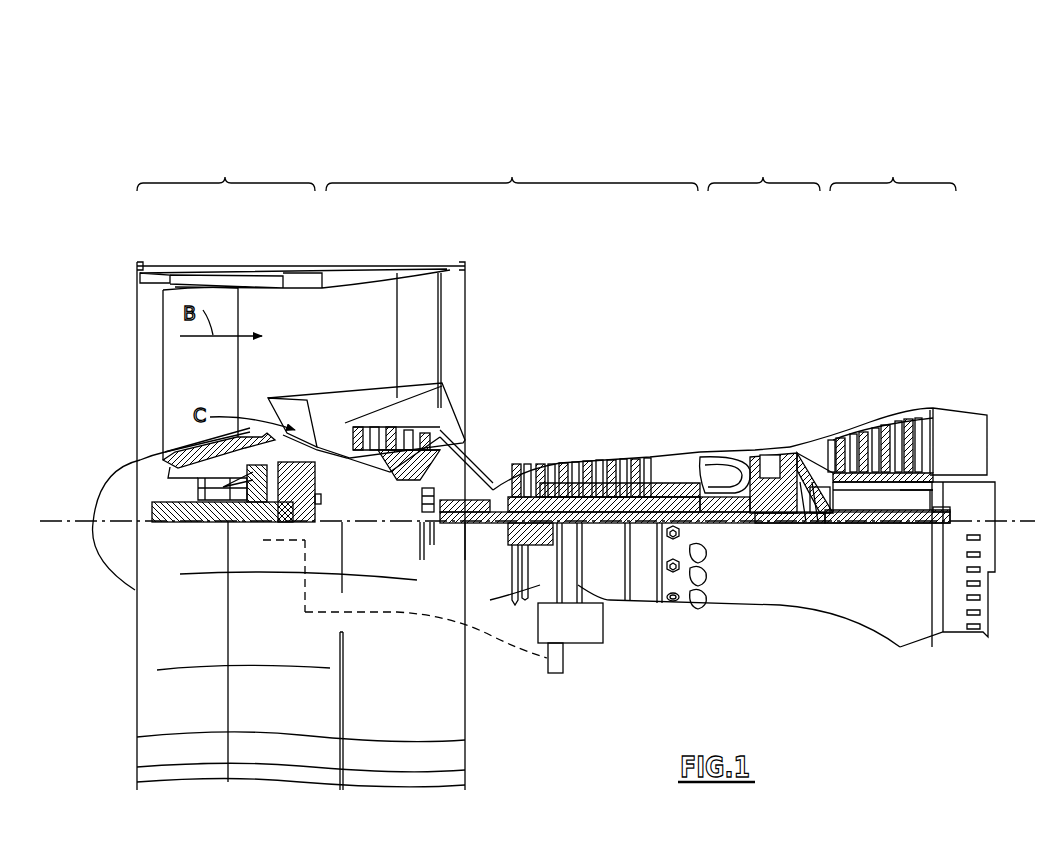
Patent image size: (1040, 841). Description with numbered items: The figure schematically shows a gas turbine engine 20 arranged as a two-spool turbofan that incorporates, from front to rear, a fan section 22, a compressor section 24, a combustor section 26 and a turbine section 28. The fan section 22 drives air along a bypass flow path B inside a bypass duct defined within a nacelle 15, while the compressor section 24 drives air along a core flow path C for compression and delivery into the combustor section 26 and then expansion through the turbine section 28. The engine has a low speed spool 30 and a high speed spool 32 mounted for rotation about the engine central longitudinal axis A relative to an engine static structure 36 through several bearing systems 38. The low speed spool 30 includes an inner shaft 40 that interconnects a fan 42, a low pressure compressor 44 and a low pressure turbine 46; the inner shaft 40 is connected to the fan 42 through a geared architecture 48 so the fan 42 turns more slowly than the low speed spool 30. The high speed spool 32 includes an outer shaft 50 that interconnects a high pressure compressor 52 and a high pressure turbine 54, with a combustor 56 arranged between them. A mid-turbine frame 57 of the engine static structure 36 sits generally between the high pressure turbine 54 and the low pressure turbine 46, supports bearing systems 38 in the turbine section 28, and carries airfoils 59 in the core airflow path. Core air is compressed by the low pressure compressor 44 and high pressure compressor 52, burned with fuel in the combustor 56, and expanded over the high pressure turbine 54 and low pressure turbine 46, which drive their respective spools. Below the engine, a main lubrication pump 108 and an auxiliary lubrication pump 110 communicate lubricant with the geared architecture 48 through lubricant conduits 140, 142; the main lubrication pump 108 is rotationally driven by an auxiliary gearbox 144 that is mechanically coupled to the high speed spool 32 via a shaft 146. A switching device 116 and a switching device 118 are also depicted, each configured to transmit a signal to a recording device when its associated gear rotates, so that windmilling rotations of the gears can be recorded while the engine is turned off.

The gas turbine engine 20 is at (778, 97).
The fan section 22 is at (226, 172).
The compressor section 24 is at (512, 172).
The combustor section 26 is at (764, 172).
The turbine section 28 is at (893, 172).
The nacelle 15 is at (303, 272).
The fan 42 is at (301, 526).
The low speed spool 30 is at (607, 528).
The high speed spool 32 is at (480, 522).
The engine static structure 36 is at (648, 607).
The bearing systems 38 is at (430, 522).
The inner shaft 40 is at (465, 535).
The low pressure compressor 44 is at (440, 410).
The low pressure turbine 46 is at (882, 420).
The geared architecture 48 is at (290, 483).
The outer shaft 50 is at (720, 522).
The high pressure compressor 52 is at (590, 490).
The high pressure turbine 54 is at (770, 455).
The combustor 56 is at (707, 465).
The mid-turbine frame 57 is at (808, 434).
The airfoils 59 is at (830, 490).
The main lubrication pump 108 is at (555, 673).
The auxiliary lubrication pump 110 is at (217, 485).
The switching device 116 is at (327, 502).
The switching device 118 is at (315, 447).
The lubricant conduit 140 is at (292, 545).
The lubricant conduit 142 is at (398, 620).
The auxiliary gearbox 144 is at (582, 643).
The shaft 146 is at (540, 594).